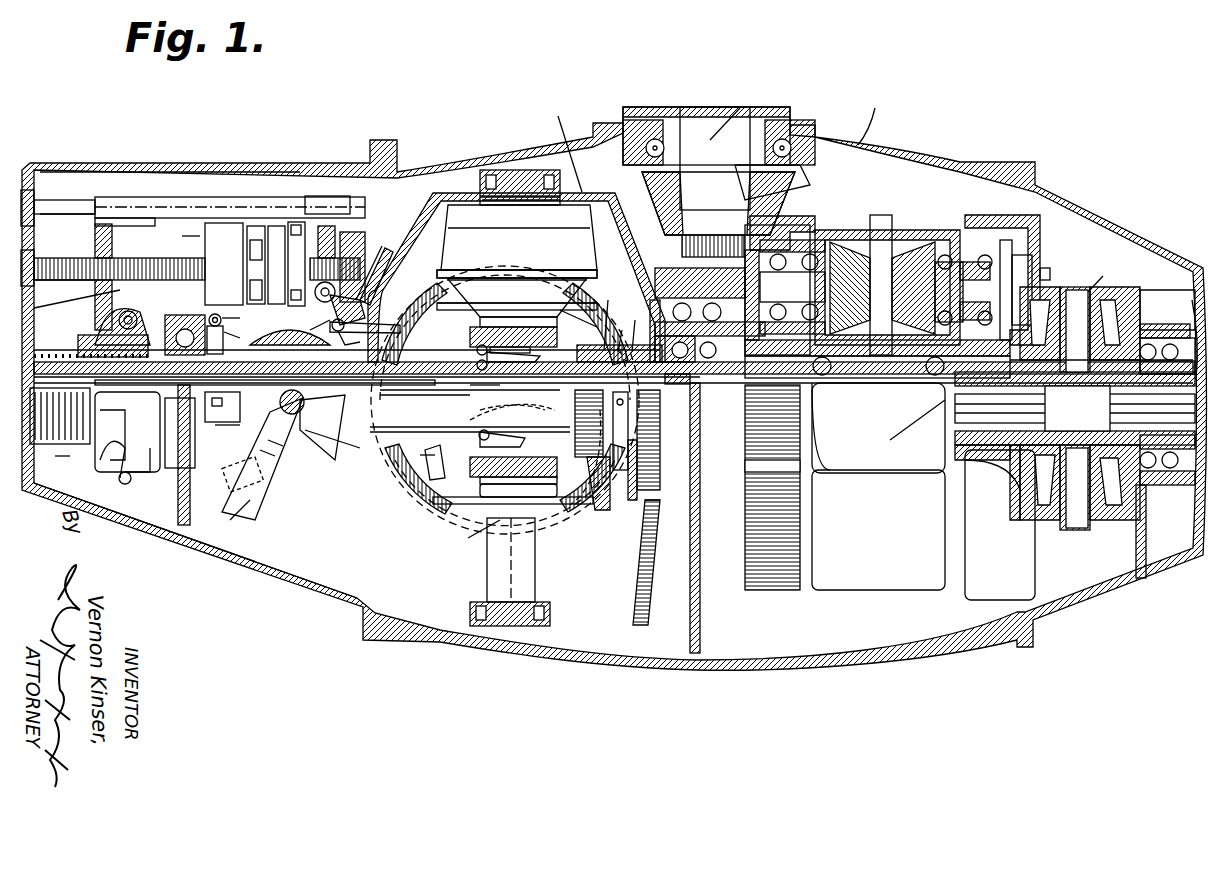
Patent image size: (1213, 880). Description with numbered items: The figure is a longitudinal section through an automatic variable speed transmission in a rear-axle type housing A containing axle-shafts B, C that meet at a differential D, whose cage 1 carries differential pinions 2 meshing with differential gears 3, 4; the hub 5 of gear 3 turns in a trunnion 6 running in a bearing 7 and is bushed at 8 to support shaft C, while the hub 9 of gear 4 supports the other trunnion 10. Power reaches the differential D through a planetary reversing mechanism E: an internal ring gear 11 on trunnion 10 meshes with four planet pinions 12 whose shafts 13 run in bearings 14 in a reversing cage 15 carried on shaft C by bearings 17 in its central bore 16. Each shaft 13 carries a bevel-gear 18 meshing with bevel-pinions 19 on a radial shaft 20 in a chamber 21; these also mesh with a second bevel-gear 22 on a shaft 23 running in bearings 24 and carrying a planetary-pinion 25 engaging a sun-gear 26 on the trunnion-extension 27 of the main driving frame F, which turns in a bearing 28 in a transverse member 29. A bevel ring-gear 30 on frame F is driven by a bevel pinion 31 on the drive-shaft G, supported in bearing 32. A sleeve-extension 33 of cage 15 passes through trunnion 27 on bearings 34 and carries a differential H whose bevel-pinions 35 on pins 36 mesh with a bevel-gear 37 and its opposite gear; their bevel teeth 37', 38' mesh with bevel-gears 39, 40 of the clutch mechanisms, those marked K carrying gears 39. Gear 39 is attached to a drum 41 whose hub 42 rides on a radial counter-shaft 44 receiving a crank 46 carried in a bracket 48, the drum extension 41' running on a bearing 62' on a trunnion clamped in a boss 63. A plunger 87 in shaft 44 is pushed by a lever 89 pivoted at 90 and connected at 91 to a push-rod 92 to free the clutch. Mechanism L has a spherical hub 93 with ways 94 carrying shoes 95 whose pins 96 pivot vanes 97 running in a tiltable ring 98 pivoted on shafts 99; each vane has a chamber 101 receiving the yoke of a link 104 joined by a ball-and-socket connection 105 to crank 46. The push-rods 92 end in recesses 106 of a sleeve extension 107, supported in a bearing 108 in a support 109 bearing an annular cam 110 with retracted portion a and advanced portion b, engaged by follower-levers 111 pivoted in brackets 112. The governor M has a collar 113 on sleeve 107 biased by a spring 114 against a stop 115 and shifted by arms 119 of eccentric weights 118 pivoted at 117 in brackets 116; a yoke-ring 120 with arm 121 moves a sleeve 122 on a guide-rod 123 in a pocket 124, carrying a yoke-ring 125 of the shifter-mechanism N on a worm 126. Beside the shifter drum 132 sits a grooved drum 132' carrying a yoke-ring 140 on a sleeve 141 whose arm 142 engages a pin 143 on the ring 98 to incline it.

The cage 1 is at (1150, 290).
The differential pinions 2 is at (1132, 285).
The differential gear 3 is at (1100, 522).
The differential gear 4 is at (1035, 512).
The hub 5 is at (1155, 485).
The trunnion 6 is at (1152, 342).
The bearing 7 is at (1190, 485).
The bushing 8 is at (1075, 423).
The hub 9 is at (955, 440).
The trunnion 10 is at (1008, 452).
The internal ring gear 11 is at (1035, 224).
The planet pinions 12 is at (1012, 242).
The pinion-shaft 13 is at (1020, 258).
The bearings 14 is at (1030, 288).
The reversing cage 15 is at (825, 240).
The central bore 16 is at (900, 370).
The bearings 17 is at (836, 378).
The bevel-gear 18 is at (945, 260).
The bevel-pinions 19 is at (915, 242).
The shaft 20 is at (881, 228).
The chamber 21 is at (845, 242).
The second bevel-gear 22 is at (812, 216).
The shaft 23 is at (792, 287).
The bearings 24 is at (794, 287).
The planetary-pinions 25 is at (790, 468).
The sun-gear 26 is at (812, 395).
The trunnion-extension 27 is at (706, 300).
The bearing 28 is at (684, 300).
The member 29 is at (700, 636).
The bevel ring-gear 30 is at (642, 178).
The bevel pinion 31 is at (770, 190).
The bearing 32 is at (660, 140).
The sleeve-extension 33 is at (680, 386).
The bearings 34 is at (698, 378).
The bevel-pinions 35 is at (622, 328).
The pins 36 is at (634, 318).
The bevel-gear 37 is at (608, 303).
The bevel teeth 37' is at (511, 560).
The bevel teeth 38' is at (629, 545).
The bevel-gear 39 is at (565, 470).
The bevel-gear 40 is at (632, 500).
The clutch drum 41 is at (507, 399).
The extension 41' is at (502, 273).
The hub 42 is at (500, 316).
The counter-shaft 44 is at (470, 425).
The crank 46 is at (502, 403).
The bracket 48 is at (413, 520).
The bearing 62' is at (521, 213).
The boss 63 is at (522, 175).
The plunger 87 is at (512, 399).
The lever 89 is at (475, 394).
The pivot 90 is at (478, 348).
The pivotal connection 91 is at (470, 387).
The push-rod 92 is at (425, 391).
The spherical hub 93 is at (318, 420).
The ways 94 is at (337, 387).
The shoe 95 is at (309, 319).
The pin 96 is at (383, 276).
The vane 97 is at (338, 303).
The ring 98 is at (250, 458).
The shafts 99 is at (270, 455).
The chamber 101 is at (353, 336).
The vibratory link 104 is at (356, 373).
The ball-and-socket connection 105 is at (512, 398).
The recesses 106 is at (238, 406).
The sleeve extension 107 is at (127, 429).
The bearing 108 is at (181, 423).
The support 109 is at (170, 520).
The annular cam 110 is at (178, 450).
The follower-levers 111 is at (244, 335).
The bracket 112 is at (243, 317).
The collar 113 is at (118, 480).
The coiled spring 114 is at (45, 356).
The stop 115 is at (74, 305).
The brackets 116 is at (145, 476).
The pivot 117 is at (122, 317).
The eccentric weight 118 is at (95, 335).
The arm 119 is at (170, 320).
The yoke-ring 120 is at (95, 462).
The radial arm 121 is at (88, 284).
The guide sleeve 122 is at (120, 198).
The guide-rod 123 is at (78, 212).
The pocket 124 is at (56, 190).
The second yoke-ring 125 is at (255, 228).
The worm 126 is at (130, 258).
The block 132 is at (221, 220).
The drum 132' is at (284, 220).
The yoke-ring 140 is at (298, 225).
The guide sleeve 141 is at (328, 198).
The arm 142 is at (328, 228).
The pin 143 is at (385, 273).
The housing A is at (864, 112).
The axle-shaft B is at (1182, 331).
The axle-shaft C is at (878, 428).
The differential D is at (1092, 390).
The planetary reversing mechanism E is at (887, 255).
The main driving frame F is at (561, 140).
The drive-shaft G is at (719, 120).
The differential H is at (617, 474).
The clutch mechanisms K is at (517, 374).
The crank-actuating mechanism L is at (251, 520).
The governor-mechanism M is at (59, 429).
The automatic shifter-mechanism N is at (177, 236).
The retracted cam portion a is at (216, 314).
The advanced cam portion b is at (227, 430).